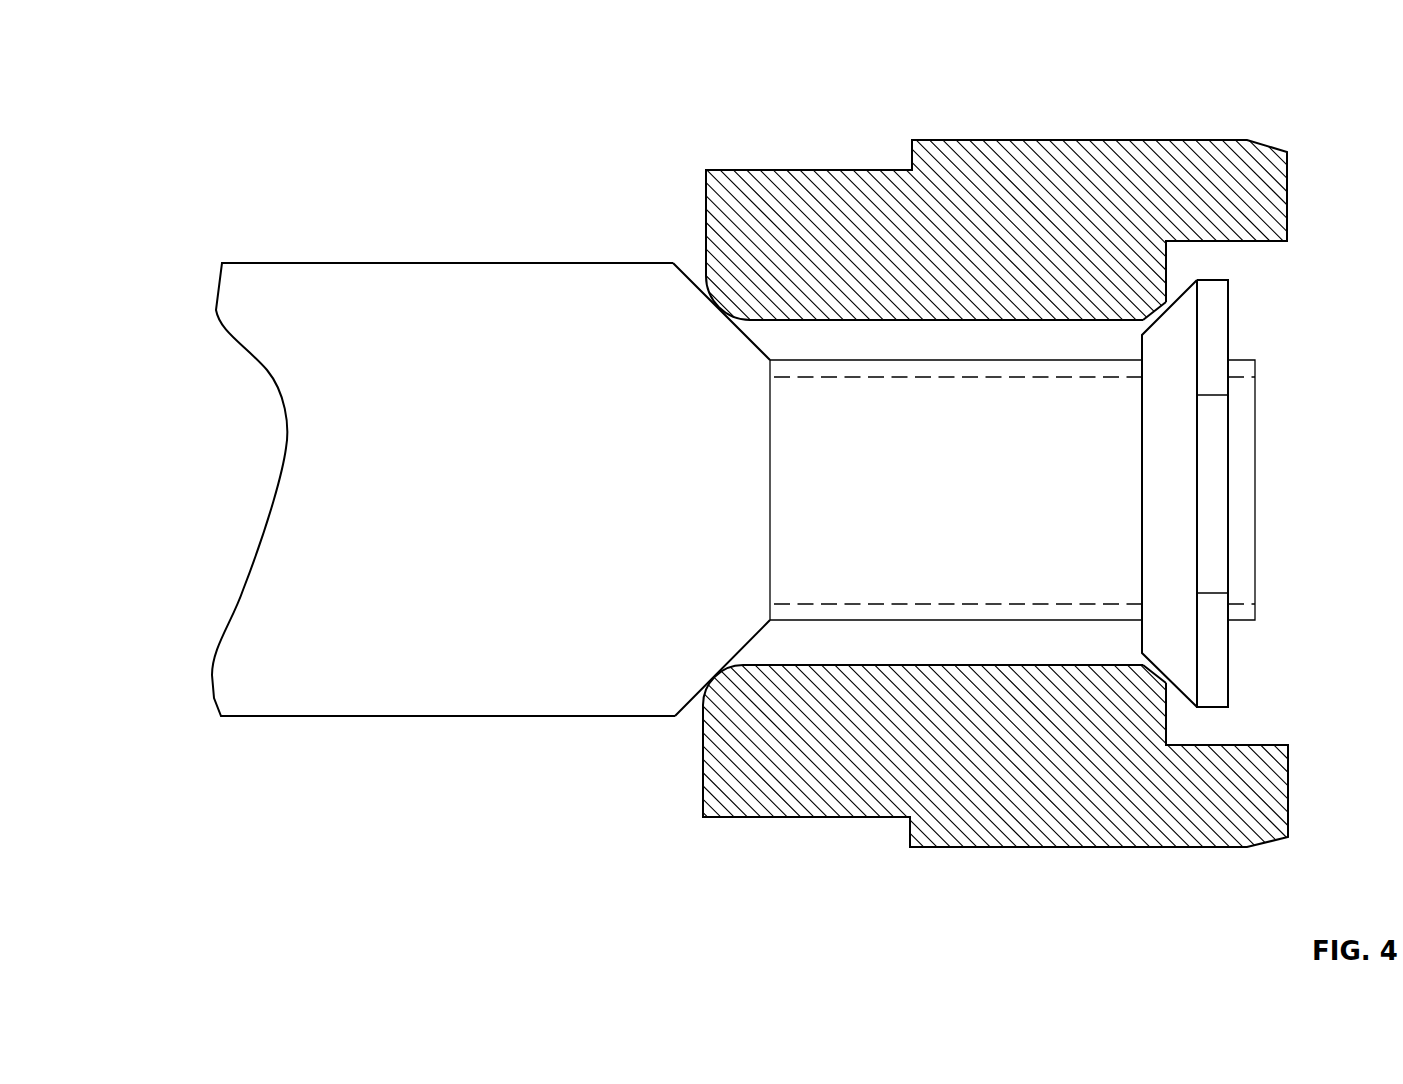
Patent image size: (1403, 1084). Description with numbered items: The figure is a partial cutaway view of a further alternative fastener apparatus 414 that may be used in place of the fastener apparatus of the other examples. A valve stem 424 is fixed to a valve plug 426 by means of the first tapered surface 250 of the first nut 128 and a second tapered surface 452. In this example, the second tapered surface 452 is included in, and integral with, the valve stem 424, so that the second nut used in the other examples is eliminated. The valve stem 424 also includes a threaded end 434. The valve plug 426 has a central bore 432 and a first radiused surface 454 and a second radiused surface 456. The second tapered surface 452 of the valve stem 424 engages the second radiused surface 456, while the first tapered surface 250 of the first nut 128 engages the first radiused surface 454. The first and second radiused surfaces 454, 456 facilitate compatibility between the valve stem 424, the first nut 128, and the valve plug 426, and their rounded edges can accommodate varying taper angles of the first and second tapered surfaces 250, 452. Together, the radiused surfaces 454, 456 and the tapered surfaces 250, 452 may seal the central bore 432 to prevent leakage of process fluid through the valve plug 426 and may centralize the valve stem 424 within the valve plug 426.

The fastener apparatus 414 is at (255, 89).
The valve stem 424 is at (372, 697).
The valve plug 426 is at (1010, 272).
The central bore 432 is at (915, 318).
The threaded end 434 is at (890, 545).
The second tapered surface 452 is at (693, 695).
The first radiused surface 454 is at (1160, 320).
The second radiused surface 456 is at (717, 305).
The first nut 128 is at (1215, 497).
The first tapered surface 250 is at (1181, 684).